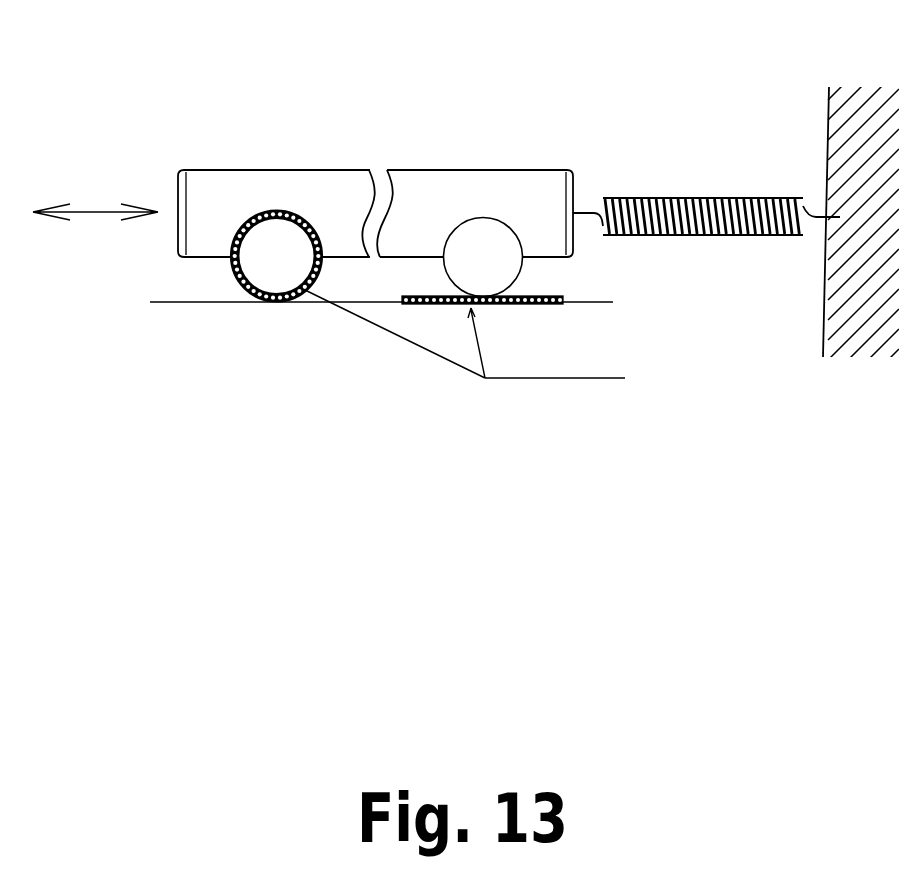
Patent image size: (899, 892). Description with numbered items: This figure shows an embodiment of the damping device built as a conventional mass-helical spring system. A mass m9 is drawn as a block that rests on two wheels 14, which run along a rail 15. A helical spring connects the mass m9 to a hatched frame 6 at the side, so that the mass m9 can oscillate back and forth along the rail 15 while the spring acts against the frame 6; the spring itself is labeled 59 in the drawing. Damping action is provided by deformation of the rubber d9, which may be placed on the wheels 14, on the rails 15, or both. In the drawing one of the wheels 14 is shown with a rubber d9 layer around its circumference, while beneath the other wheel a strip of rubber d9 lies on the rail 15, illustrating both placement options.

The frame 6 is at (877, 100).
The wheels 14 is at (272, 272).
The rails 15 is at (578, 313).
The spring 59 is at (752, 198).
The mass m9 is at (440, 186).
The rubber d9 is at (243, 287).